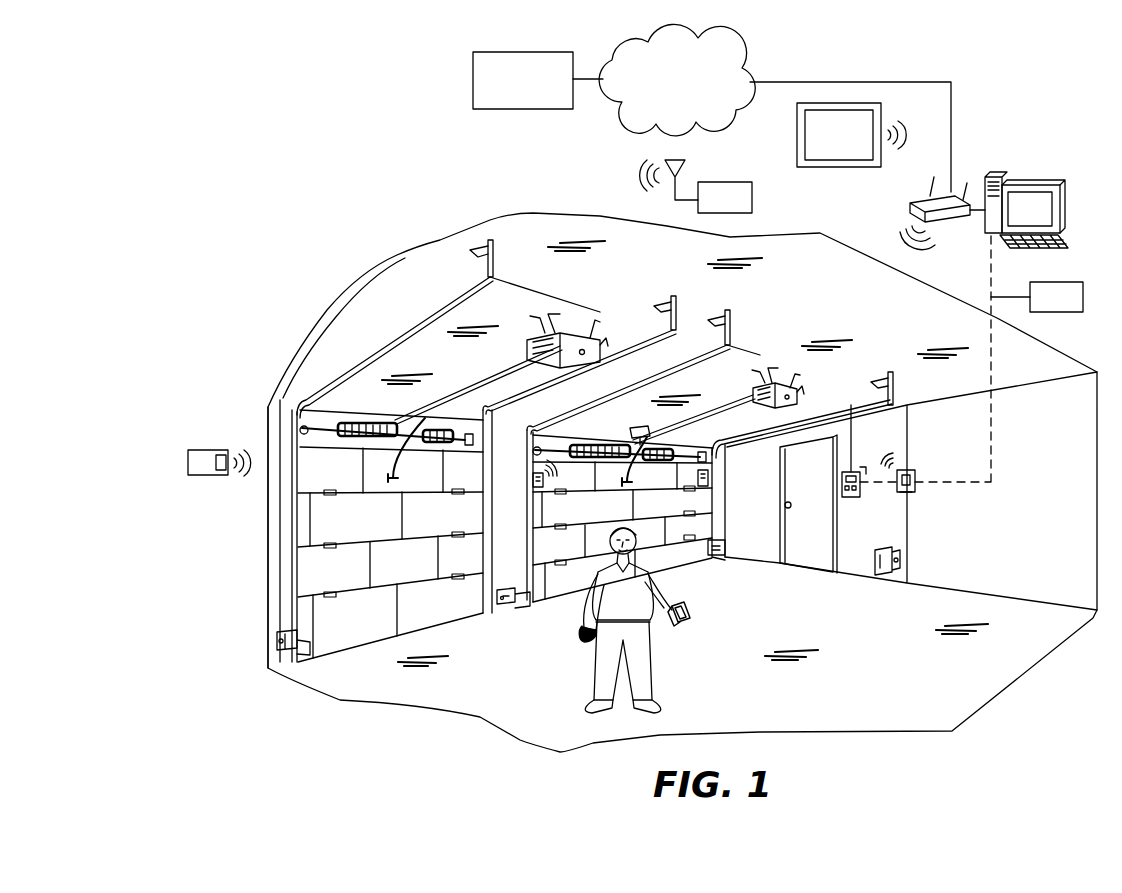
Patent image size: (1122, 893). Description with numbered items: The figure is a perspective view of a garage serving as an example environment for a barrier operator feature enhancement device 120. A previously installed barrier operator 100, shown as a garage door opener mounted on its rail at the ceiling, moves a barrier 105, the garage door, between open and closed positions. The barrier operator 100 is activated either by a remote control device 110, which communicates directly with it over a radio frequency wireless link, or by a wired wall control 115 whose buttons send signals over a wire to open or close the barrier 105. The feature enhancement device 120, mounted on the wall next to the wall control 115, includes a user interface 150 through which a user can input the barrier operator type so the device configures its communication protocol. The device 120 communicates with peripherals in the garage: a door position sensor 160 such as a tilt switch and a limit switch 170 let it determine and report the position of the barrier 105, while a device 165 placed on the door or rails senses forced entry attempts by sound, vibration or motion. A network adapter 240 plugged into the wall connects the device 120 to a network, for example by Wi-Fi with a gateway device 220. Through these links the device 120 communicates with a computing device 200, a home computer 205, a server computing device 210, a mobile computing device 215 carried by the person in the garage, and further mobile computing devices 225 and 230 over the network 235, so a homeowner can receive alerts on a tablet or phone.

The barrier operator 100 is at (752, 397).
The barrier 105 is at (578, 550).
The remote control device 110 is at (197, 449).
The wall control 115 is at (856, 498).
The barrier operator feature enhancement device 120 is at (914, 472).
The user interface 150 is at (914, 489).
The door position sensor 160 is at (541, 488).
The forced entry detection device 165 is at (712, 476).
The limit switch 170 is at (638, 430).
The computing device 200 is at (1042, 308).
The home computer 205 is at (1000, 178).
The server computing device 210 is at (509, 102).
The mobile computing device 215 is at (686, 607).
The gateway device 220 is at (925, 200).
The mobile computing device 225 is at (825, 143).
The mobile computing device 230 is at (711, 207).
The network 235 is at (662, 100).
The network adapter 240 is at (882, 550).